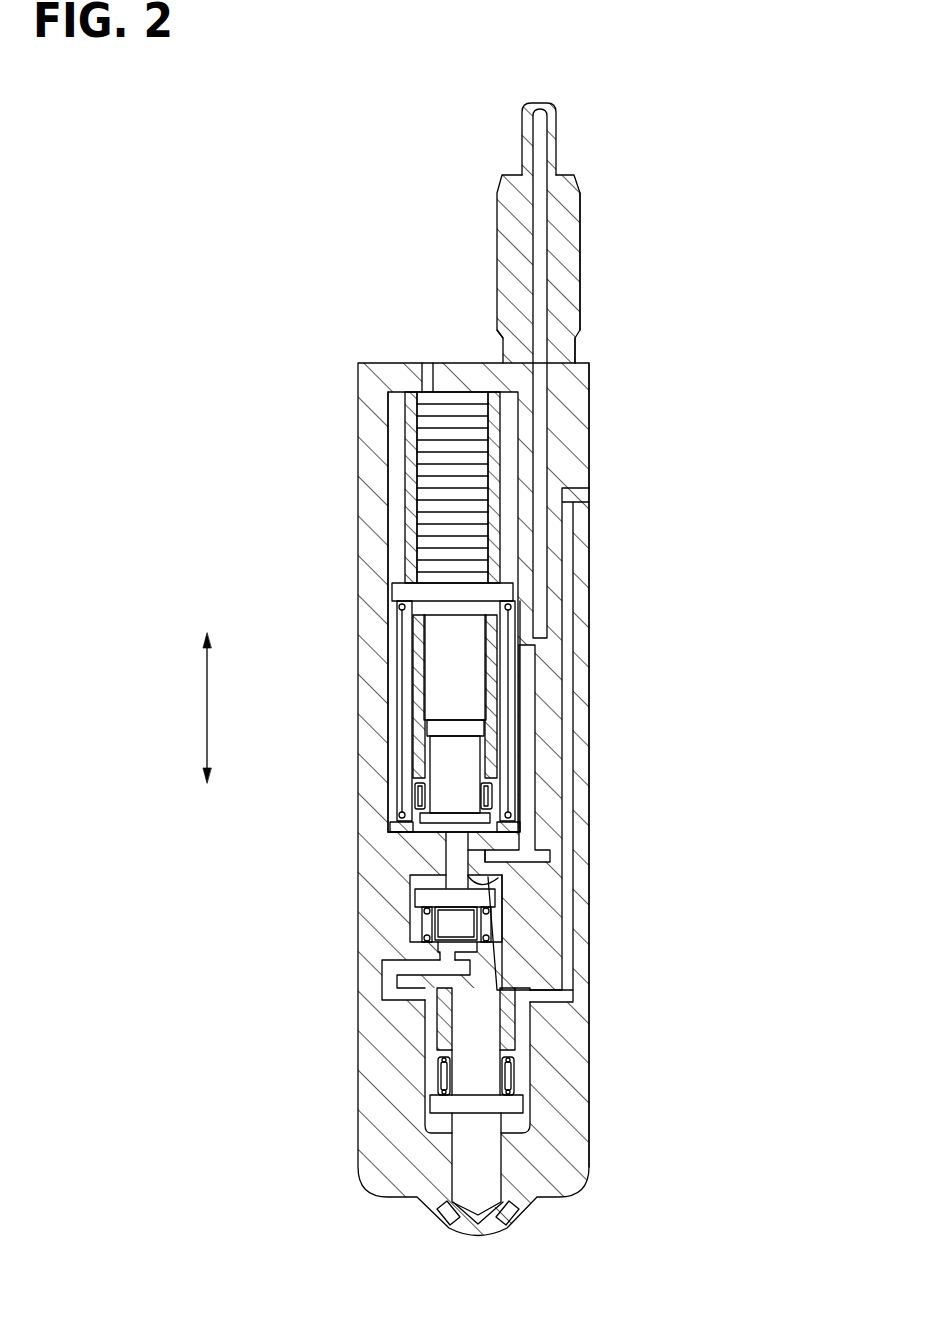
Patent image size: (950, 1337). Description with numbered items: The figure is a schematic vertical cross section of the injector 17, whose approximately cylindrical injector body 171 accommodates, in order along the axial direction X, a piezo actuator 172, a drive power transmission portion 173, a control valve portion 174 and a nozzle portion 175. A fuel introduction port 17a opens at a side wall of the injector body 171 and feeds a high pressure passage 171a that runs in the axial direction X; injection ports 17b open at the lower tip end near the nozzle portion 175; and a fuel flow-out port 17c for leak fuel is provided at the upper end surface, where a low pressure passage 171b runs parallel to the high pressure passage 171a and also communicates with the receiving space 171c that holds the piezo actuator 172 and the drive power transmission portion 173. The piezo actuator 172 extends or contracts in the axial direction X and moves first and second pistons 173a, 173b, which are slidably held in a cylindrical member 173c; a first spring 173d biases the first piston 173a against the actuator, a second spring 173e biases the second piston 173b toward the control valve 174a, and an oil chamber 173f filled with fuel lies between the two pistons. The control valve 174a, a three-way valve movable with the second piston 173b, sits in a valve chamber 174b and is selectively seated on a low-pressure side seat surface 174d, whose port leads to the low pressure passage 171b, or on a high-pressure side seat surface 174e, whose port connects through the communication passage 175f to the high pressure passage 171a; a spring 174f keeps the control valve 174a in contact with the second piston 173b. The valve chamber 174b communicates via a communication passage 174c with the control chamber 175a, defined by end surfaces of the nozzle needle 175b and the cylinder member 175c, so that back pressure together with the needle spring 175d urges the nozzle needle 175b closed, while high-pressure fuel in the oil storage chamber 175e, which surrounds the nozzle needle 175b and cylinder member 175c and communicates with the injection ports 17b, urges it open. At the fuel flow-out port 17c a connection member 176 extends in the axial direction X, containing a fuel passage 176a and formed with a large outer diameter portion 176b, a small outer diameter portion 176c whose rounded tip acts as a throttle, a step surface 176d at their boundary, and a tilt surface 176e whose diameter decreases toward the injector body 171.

The injector 17 is at (373, 314).
The fuel introduction port 17a is at (589, 490).
The injection ports 17b is at (440, 1213).
The fuel flow-out port 17c is at (575, 343).
The injector body 171 is at (360, 462).
The high pressure passage 171a is at (590, 625).
The low pressure passage 171b is at (560, 403).
The receiving space 171c is at (398, 548).
The piezo actuator 172 is at (405, 498).
The drive power transmission portion 173 is at (394, 702).
The first piston 173a is at (447, 635).
The second piston 173b is at (447, 769).
The cylindrical member 173c is at (418, 664).
The first spring 173d is at (510, 690).
The second spring 173e is at (496, 794).
The oil chamber 173f is at (469, 728).
The control valve portion 174 is at (404, 898).
The control valve 174a is at (443, 879).
The valve chamber 174b is at (416, 918).
The communication passage 174c is at (492, 972).
The low-pressure side seat surface 174d is at (470, 879).
The high-pressure side seat surface 174e is at (487, 921).
The spring 174f is at (410, 928).
The nozzle portion 175 is at (424, 1030).
The control chamber 175a is at (540, 996).
The nozzle needle 175b is at (490, 1152).
The cylinder member 175c is at (510, 1030).
The needle spring 175d is at (445, 1078).
The oil storage chamber 175e is at (512, 1070).
The communication passage 175f is at (383, 986).
The connection member 176 is at (582, 254).
The fuel passage 176a is at (581, 218).
The large outer diameter portion 176b is at (581, 294).
The small outer diameter portion 176c is at (557, 150).
The step surface 176d is at (521, 172).
The tilt surface 176e is at (500, 338).
The axial direction X is at (207, 700).